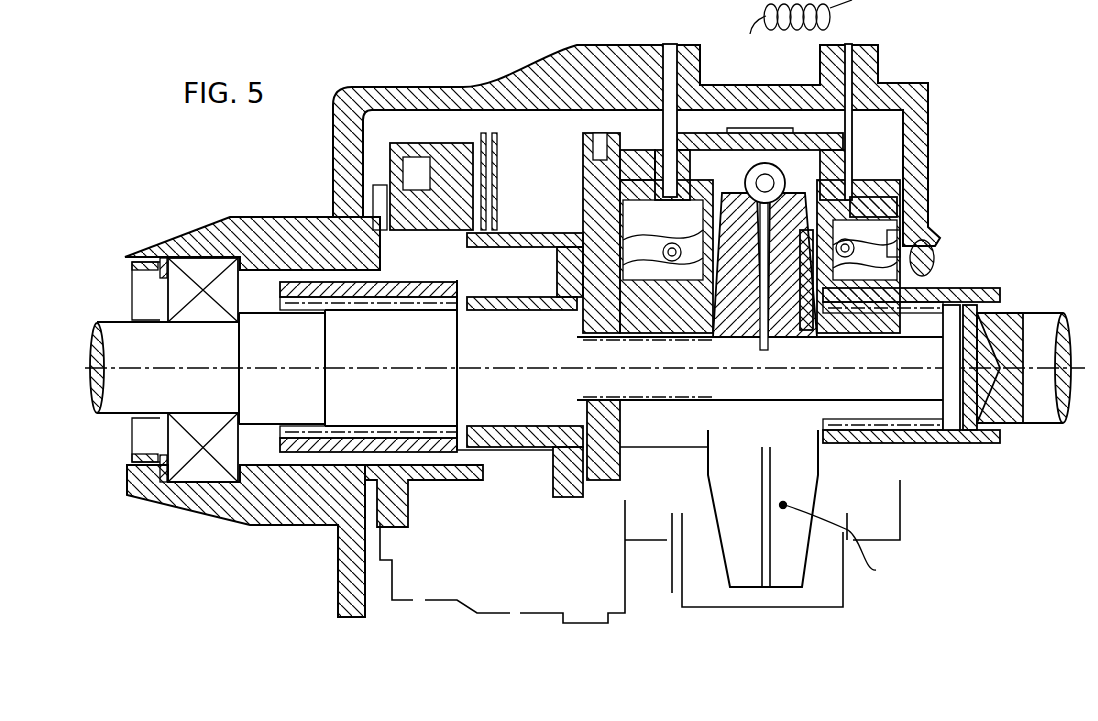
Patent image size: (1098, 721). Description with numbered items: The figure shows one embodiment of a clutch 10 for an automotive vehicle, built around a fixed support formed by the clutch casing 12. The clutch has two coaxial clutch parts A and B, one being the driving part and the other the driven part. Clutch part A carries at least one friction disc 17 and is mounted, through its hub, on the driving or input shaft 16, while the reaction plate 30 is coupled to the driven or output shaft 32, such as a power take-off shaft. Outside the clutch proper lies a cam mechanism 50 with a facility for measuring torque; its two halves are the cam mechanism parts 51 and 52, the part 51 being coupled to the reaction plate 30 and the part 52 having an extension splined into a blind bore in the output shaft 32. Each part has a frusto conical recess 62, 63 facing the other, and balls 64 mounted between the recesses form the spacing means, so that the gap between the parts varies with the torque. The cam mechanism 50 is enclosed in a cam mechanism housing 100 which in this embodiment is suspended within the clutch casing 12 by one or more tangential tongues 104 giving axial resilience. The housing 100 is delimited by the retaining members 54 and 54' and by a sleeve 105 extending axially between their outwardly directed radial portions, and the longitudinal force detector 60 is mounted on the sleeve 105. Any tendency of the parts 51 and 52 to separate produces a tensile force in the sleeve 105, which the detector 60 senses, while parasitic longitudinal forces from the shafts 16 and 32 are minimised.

The clutch 10 is at (423, 128).
The clutch casing 12 is at (186, 224).
The input shaft 16 is at (122, 390).
The friction disc 17 is at (497, 227).
The reaction plate 30 is at (635, 160).
The output shaft 32 is at (1040, 337).
The cam mechanism 50 is at (844, 546).
The cam mechanism part 51 is at (743, 570).
The cam mechanism part 52 is at (786, 570).
The retaining member 54 is at (626, 91).
The retaining member 54' is at (923, 228).
The longitudinal force detector 60 is at (742, 140).
The frusto conical recess 62 is at (713, 333).
The frusto conical recess 63 is at (843, 153).
The ball 64 is at (730, 158).
The cam mechanism housing 100 is at (799, 120).
The tangential tongue 104 is at (668, 127).
The sleeve 105 is at (847, 93).
The clutch part A is at (528, 456).
The clutch part B is at (654, 458).